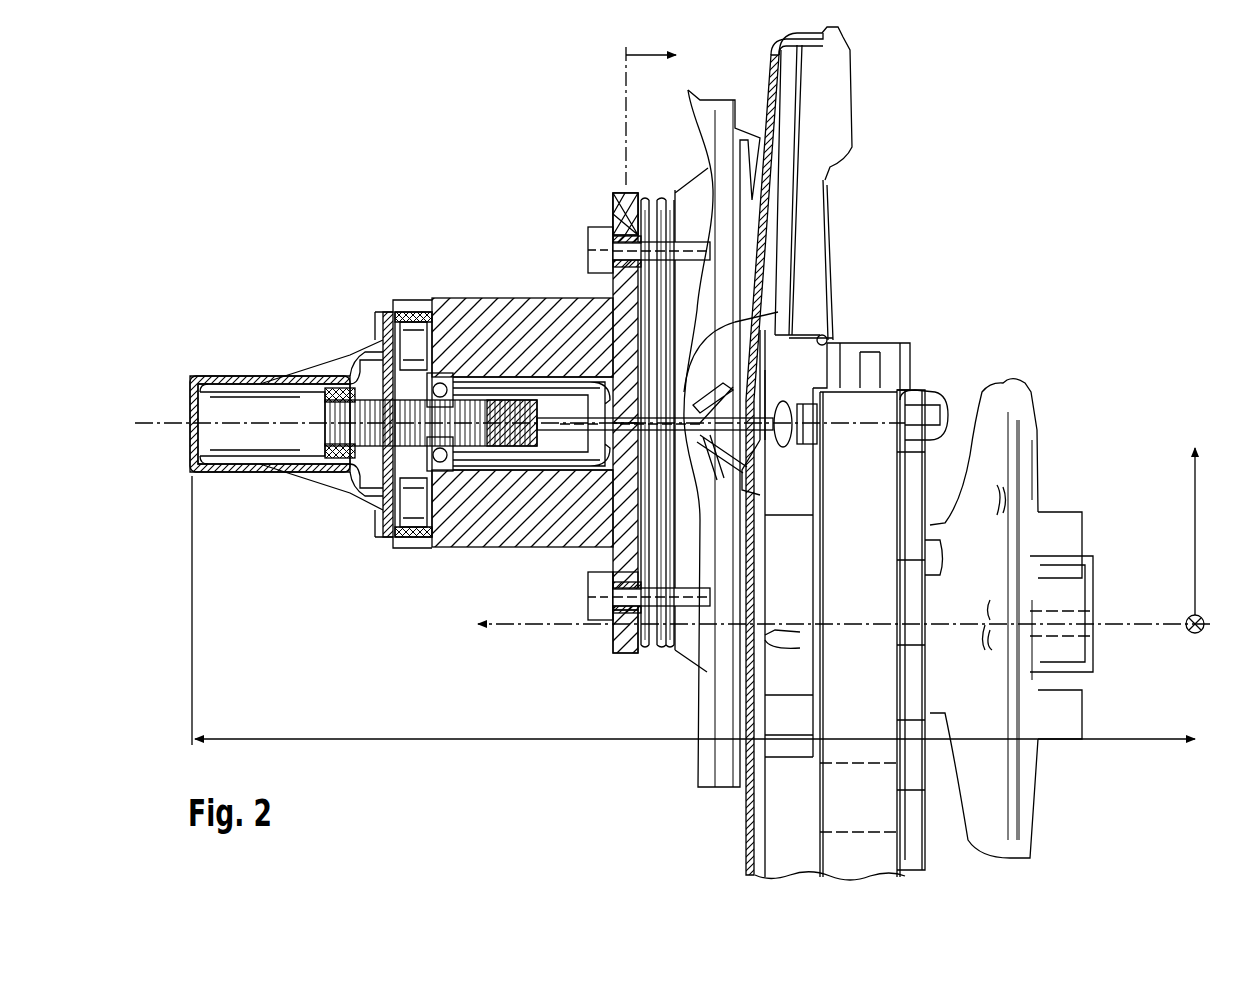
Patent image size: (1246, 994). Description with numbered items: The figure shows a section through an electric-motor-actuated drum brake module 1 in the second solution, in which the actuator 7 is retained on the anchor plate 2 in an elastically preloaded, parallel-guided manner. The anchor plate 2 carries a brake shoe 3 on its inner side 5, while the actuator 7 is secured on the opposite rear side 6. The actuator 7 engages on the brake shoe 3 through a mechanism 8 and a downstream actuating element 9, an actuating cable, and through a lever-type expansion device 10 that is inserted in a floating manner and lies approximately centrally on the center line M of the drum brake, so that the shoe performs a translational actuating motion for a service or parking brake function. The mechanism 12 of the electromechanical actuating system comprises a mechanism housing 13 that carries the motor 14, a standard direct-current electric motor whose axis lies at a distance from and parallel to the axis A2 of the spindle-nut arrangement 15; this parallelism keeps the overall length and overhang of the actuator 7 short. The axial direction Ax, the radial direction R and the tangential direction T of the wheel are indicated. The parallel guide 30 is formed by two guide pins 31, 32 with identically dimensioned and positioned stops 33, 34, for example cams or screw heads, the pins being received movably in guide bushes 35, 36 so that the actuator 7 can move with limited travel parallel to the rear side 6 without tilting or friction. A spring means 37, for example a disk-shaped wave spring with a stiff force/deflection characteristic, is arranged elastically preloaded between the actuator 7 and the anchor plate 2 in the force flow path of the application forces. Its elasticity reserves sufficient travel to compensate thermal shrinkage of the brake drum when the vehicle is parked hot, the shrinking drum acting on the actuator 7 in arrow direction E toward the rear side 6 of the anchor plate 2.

The drum brake module 1 is at (392, 142).
The anchor plate 2 is at (818, 68).
The brake shoe 3 is at (862, 455).
The inner side 5 is at (790, 180).
The rear side 6 is at (770, 98).
The actuator 7 is at (510, 290).
The mechanism 8 is at (378, 315).
The actuating element 9 is at (745, 330).
The expansion device 10 is at (945, 385).
The mechanism 12 is at (405, 315).
The mechanism housing 13 is at (362, 360).
The motor 14 is at (465, 290).
The spindle-nut arrangement 15 is at (343, 458).
The parallel guide 30 is at (575, 232).
The guide pin 31 is at (625, 238).
The guide pin 32 is at (625, 652).
The stop 33 is at (618, 255).
The stop 34 is at (600, 598).
The guide bush 35 is at (617, 194).
The guide bush 36 is at (608, 580).
The spring means 37 is at (662, 650).
The axis of spindle-nut arrangement A2 is at (145, 418).
The axial direction Ax is at (836, 640).
The arrow direction E is at (654, 107).
The radial direction R is at (1205, 527).
The tangential direction T is at (1204, 638).
The center line M is at (1126, 626).